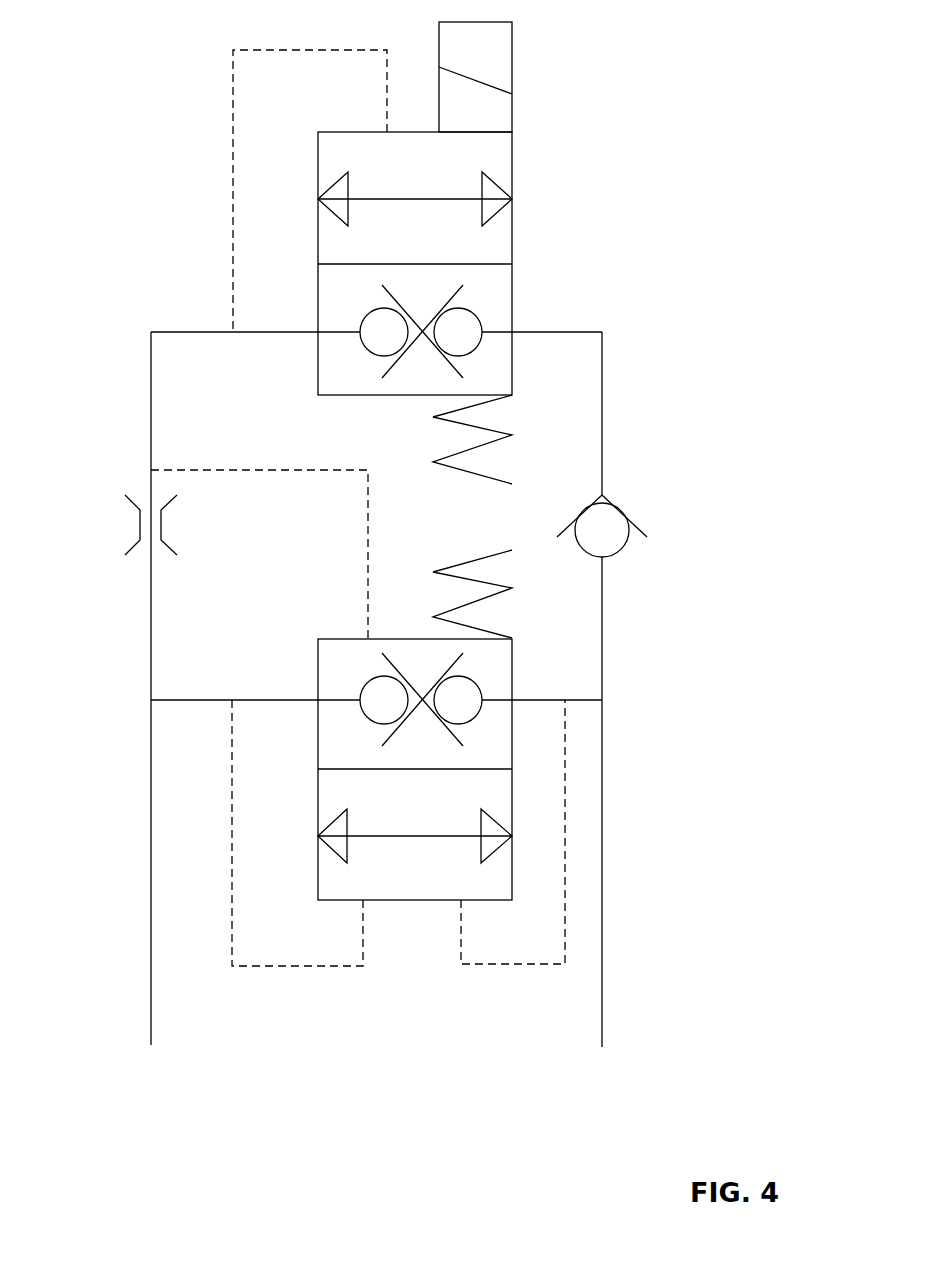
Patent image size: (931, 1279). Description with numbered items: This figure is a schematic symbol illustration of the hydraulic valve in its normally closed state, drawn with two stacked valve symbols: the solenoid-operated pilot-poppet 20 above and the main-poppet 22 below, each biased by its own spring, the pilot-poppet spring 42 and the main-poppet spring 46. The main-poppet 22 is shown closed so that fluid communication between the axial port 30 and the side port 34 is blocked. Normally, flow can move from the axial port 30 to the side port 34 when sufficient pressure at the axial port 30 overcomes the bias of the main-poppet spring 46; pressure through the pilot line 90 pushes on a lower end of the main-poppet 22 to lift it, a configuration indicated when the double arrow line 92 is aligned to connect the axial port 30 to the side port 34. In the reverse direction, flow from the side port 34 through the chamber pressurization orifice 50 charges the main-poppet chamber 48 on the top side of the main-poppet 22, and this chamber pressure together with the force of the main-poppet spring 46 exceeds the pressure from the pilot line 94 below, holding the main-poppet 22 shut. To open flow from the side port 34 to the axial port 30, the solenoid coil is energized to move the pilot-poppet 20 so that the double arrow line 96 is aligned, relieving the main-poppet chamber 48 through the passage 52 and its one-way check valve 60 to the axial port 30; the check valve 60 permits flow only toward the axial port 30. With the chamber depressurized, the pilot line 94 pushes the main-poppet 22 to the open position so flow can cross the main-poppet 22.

The pilot-poppet 20 is at (522, 248).
The main-poppet 22 is at (522, 754).
The axial port 30 is at (619, 1082).
The side port 34 is at (165, 1084).
The pilot-poppet spring 42 is at (493, 428).
The main-poppet spring 46 is at (472, 557).
The main-poppet chamber 48 is at (293, 470).
The chamber pressurization orifice 50 is at (120, 519).
The passage 52 is at (233, 193).
The one-way check valve 60 is at (607, 553).
The pilot line 90 is at (508, 964).
The double arrow line 92 is at (427, 836).
The pilot line 94 is at (304, 966).
The double arrow line 96 is at (400, 196).